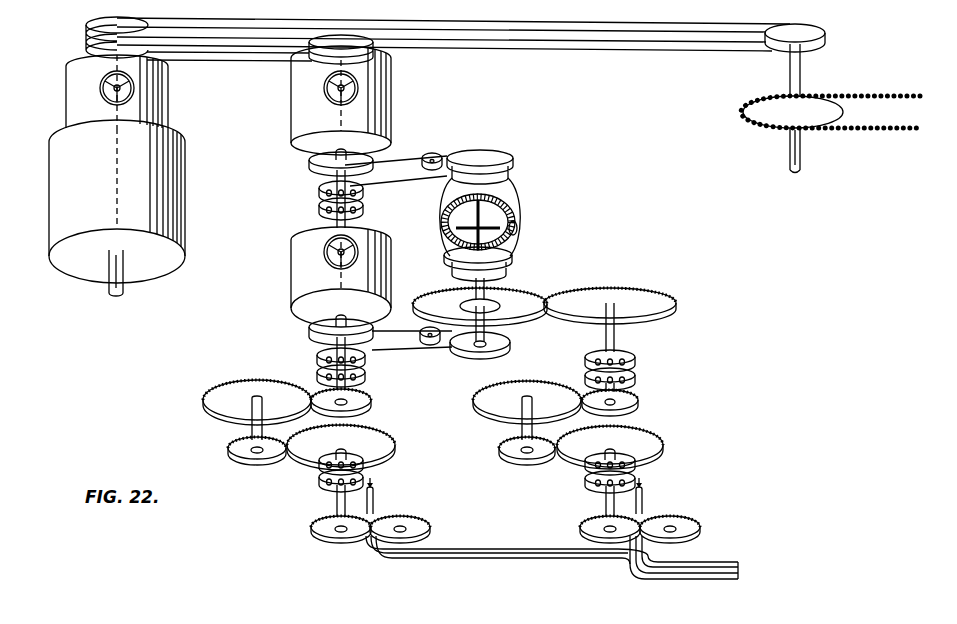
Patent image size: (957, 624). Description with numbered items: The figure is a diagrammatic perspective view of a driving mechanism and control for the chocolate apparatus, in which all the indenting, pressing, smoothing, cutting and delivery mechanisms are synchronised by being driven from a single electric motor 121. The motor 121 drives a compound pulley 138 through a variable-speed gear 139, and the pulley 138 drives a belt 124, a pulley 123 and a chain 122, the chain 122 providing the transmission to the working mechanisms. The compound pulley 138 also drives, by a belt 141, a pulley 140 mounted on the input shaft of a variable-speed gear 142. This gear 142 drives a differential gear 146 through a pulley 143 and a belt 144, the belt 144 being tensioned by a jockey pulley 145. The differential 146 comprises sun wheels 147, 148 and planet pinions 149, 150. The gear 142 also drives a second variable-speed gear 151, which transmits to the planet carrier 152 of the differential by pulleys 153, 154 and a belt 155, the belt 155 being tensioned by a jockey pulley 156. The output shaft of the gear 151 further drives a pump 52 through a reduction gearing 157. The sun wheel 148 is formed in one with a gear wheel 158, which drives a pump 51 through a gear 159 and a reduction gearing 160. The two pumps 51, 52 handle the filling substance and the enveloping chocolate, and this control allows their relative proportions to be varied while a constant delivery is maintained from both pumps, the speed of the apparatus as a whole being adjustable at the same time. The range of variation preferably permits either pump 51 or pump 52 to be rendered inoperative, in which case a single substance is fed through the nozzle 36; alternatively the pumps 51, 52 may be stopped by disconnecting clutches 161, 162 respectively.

The nozzle 36 is at (721, 557).
The pump 51 is at (661, 520).
The pump 52 is at (325, 531).
The electric motor 121 is at (52, 184).
The chain 122 is at (858, 131).
The pulley 123 is at (823, 46).
The belt 124 is at (633, 50).
The compound pulley 138 is at (87, 52).
The variable-speed gear 139 is at (68, 85).
The pulley 140 is at (377, 54).
The belt 141 is at (253, 61).
The variable-speed gear 142 is at (291, 108).
The pulley 143 is at (485, 150).
The belt 144 is at (308, 165).
The jockey pulley 145 is at (432, 152).
The differential gear 146 is at (491, 203).
The sun wheel 147 is at (506, 182).
The sun wheel 148 is at (511, 258).
The planet pinion 149 is at (448, 223).
The planet pinion 150 is at (520, 216).
The second variable-speed gear 151 is at (290, 267).
The planet carrier 152 is at (448, 237).
The pulley 153 is at (308, 327).
The pulley 154 is at (501, 344).
The belt 155 is at (447, 350).
The jockey pulley 156 is at (428, 341).
The reduction gearing 157 is at (230, 428).
The gear wheel 158 is at (535, 294).
The gear 159 is at (656, 300).
The reduction gearing 160 is at (655, 412).
The clutch 161 is at (645, 469).
The clutch 162 is at (318, 476).